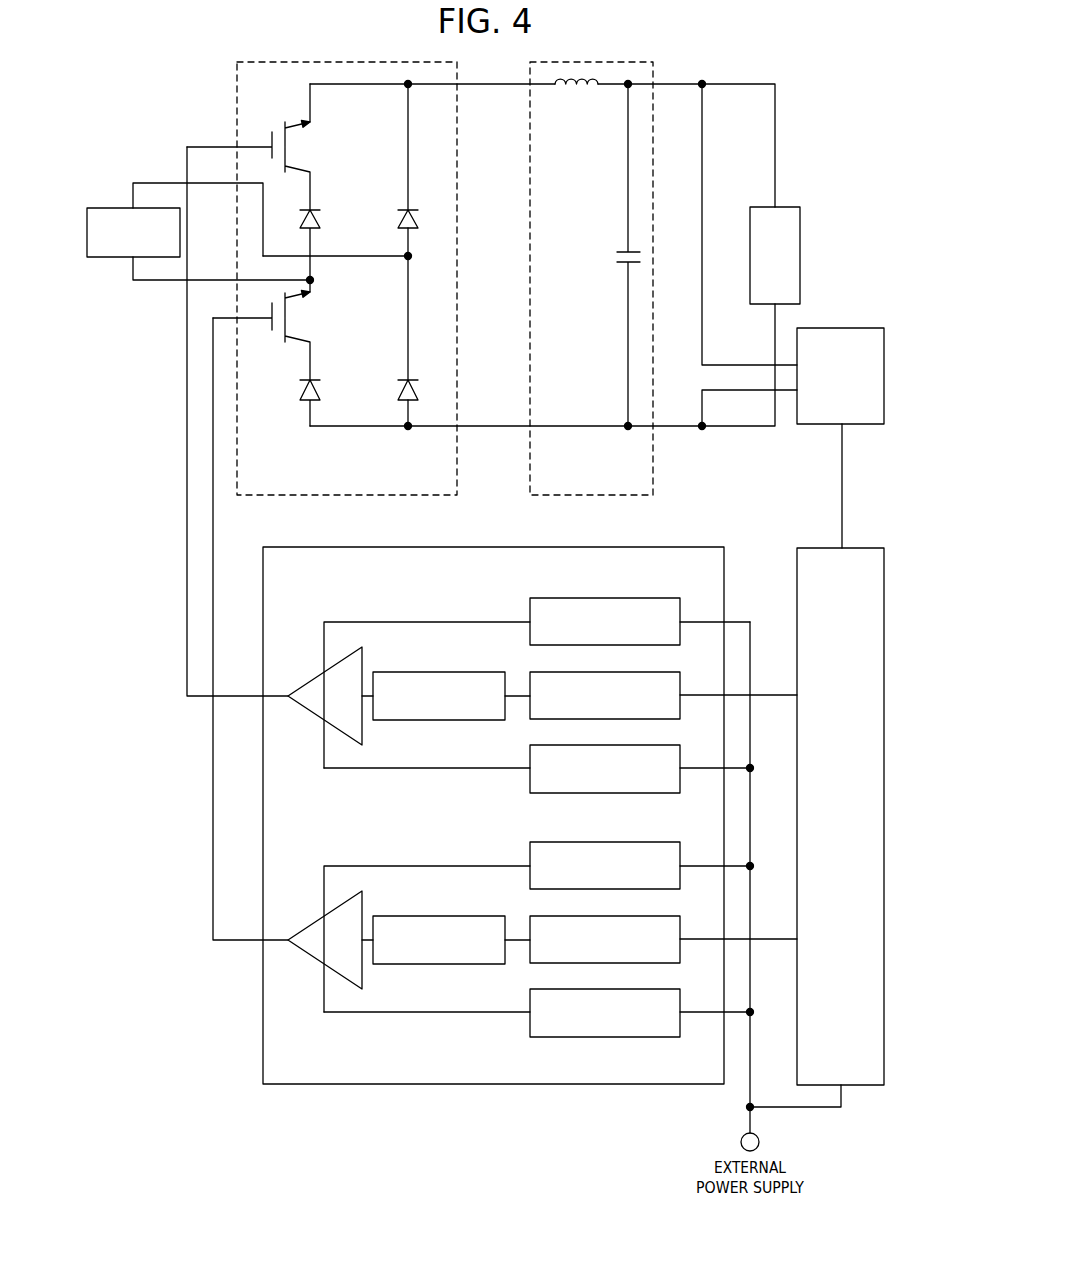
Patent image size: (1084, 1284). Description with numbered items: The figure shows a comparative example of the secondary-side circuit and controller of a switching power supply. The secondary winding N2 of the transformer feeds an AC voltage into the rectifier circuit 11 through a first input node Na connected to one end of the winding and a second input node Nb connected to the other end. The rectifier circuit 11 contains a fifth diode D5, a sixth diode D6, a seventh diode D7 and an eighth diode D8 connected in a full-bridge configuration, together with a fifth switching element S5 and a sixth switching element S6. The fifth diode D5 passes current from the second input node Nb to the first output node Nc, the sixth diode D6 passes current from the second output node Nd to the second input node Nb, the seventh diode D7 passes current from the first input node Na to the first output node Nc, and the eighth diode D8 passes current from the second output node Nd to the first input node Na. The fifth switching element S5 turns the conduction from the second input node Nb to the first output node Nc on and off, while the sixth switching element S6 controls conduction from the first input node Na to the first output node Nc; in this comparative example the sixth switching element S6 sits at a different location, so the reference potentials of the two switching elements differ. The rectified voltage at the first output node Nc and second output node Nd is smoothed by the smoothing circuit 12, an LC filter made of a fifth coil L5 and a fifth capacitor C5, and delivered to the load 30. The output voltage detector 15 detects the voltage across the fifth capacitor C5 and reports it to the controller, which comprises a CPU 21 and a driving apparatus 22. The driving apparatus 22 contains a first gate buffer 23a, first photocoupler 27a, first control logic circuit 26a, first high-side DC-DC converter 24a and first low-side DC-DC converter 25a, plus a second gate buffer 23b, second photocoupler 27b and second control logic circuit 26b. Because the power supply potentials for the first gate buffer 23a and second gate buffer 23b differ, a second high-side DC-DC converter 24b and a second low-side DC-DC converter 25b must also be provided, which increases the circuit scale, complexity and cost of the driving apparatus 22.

The rectifier circuit 11 is at (338, 287).
The smoothing circuit 12 is at (561, 278).
The output voltage detector 15 is at (851, 328).
The CPU 21 is at (855, 548).
The driving apparatus 22 is at (685, 548).
The first gate buffer 23a is at (362, 671).
The second gate buffer 23b is at (362, 915).
The first high-side DC-DC converter 24a is at (682, 599).
The second high-side DC-DC converter 24b is at (682, 843).
The first low-side DC-DC converter 25a is at (682, 747).
The second low-side DC-DC converter 25b is at (682, 991).
The first control logic circuit 26a is at (682, 673).
The second control logic circuit 26b is at (682, 917).
The first photocoupler 27a is at (478, 672).
The second photocoupler 27b is at (478, 916).
The load 30 is at (784, 208).
The secondary winding N2 is at (89, 207).
The fifth switching element S5 is at (264, 147).
The sixth switching element S6 is at (277, 330).
The fifth diode D5 is at (325, 243).
The sixth diode D6 is at (325, 402).
The seventh diode D7 is at (423, 219).
The eighth diode D8 is at (423, 390).
The fifth coil L5 is at (576, 95).
The fifth capacitor C5 is at (610, 255).
The first input node Na is at (350, 257).
The second input node Nb is at (324, 281).
The first output node Nc is at (422, 93).
The second output node Nd is at (422, 415).